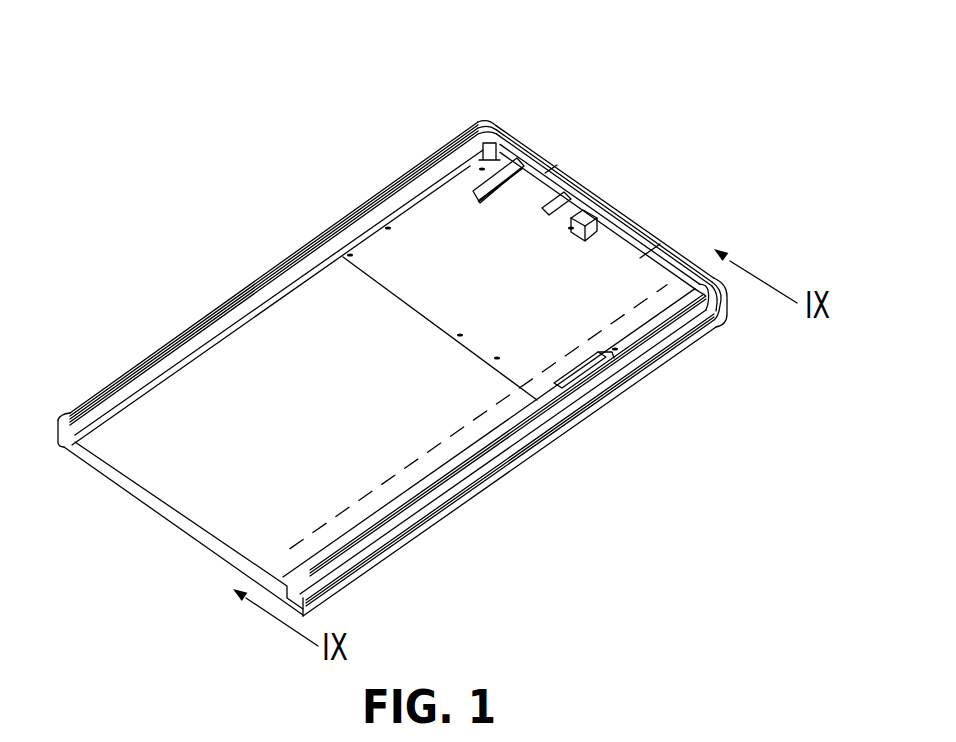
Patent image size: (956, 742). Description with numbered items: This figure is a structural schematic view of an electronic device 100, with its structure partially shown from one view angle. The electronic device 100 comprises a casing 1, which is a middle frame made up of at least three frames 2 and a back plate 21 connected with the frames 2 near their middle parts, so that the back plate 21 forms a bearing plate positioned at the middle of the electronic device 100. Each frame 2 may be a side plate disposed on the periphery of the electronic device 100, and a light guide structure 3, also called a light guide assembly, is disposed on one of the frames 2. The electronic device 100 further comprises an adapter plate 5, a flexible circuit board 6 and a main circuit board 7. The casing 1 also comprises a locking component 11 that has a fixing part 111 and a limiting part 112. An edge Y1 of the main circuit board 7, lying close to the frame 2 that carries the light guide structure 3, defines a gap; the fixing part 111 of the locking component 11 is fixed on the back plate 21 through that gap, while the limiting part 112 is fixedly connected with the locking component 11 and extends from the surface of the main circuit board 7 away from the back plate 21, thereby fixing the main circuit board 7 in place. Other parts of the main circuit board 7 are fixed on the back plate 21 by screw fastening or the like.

The electronic device 100 is at (146, 68).
The casing 1 is at (250, 277).
The frame 2 is at (667, 250).
The light guide structure 3 is at (627, 205).
The locking component 11 is at (634, 128).
The limiting part 112 is at (550, 170).
The fixing part 111 is at (587, 210).
The flexible circuit board 6 is at (503, 172).
The adapter plate 5 is at (547, 198).
The main circuit board 7 is at (433, 212).
The back plate 21 is at (342, 463).
The edge of the main circuit board Y1 is at (652, 243).